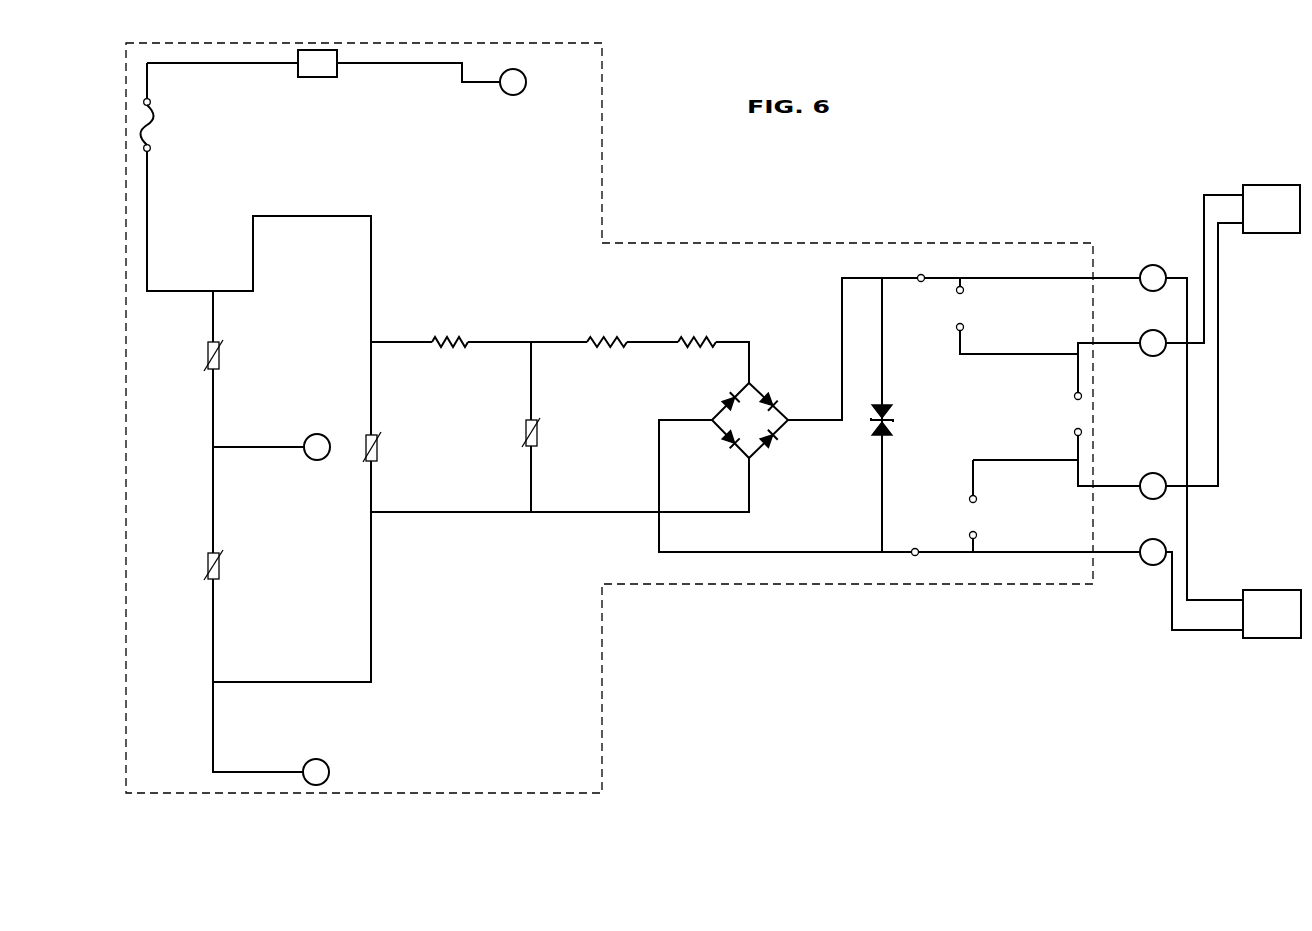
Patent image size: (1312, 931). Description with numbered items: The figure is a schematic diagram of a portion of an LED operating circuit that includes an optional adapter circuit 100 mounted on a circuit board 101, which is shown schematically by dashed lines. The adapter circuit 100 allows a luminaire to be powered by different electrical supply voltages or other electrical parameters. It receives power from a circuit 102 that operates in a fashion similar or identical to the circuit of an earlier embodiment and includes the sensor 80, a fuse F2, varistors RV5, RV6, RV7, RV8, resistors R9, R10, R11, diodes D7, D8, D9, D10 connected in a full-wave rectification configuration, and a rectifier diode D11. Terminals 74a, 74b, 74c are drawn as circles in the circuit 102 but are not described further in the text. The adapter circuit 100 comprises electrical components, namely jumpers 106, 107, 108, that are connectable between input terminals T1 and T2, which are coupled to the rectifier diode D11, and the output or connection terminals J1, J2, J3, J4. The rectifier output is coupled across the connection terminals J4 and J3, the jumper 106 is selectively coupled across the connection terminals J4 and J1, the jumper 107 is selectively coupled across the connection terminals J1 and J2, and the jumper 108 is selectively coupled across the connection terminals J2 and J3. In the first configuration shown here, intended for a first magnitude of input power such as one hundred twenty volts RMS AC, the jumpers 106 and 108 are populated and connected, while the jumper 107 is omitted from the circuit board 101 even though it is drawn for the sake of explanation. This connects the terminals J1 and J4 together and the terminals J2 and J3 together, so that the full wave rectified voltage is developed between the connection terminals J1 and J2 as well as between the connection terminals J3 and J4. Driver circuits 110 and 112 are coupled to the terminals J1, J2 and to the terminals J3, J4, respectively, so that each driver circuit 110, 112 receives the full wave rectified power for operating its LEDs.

The fuse F2 is at (153, 118).
The sensor 80 is at (314, 78).
The terminal 74a is at (516, 95).
The terminal 74b is at (320, 460).
The terminal 74c is at (328, 762).
The circuit 102 is at (497, 232).
The varistor RV5 is at (217, 340).
The varistor RV6 is at (217, 552).
The varistor RV7 is at (369, 433).
The varistor RV8 is at (523, 430).
The resistor R9 is at (467, 342).
The resistor R10 is at (628, 342).
The resistor R11 is at (716, 342).
The diode D7 is at (725, 397).
The diode D8 is at (770, 396).
The diode D9 is at (726, 441).
The diode D10 is at (780, 446).
The rectifier diode D11 is at (878, 410).
The input terminal T1 is at (920, 274).
The input terminal T2 is at (915, 556).
The jumper 106 is at (957, 306).
The jumper 107 is at (1077, 412).
The jumper 108 is at (970, 507).
The connection terminal J1 is at (1145, 355).
The connection terminal J2 is at (1144, 498).
The connection terminal J3 is at (1145, 564).
The connection terminal J4 is at (1145, 290).
The driver circuit 110 is at (1257, 234).
The driver circuit 112 is at (1274, 588).
The adapter circuit 100 is at (1066, 603).
The circuit board 101 is at (730, 575).